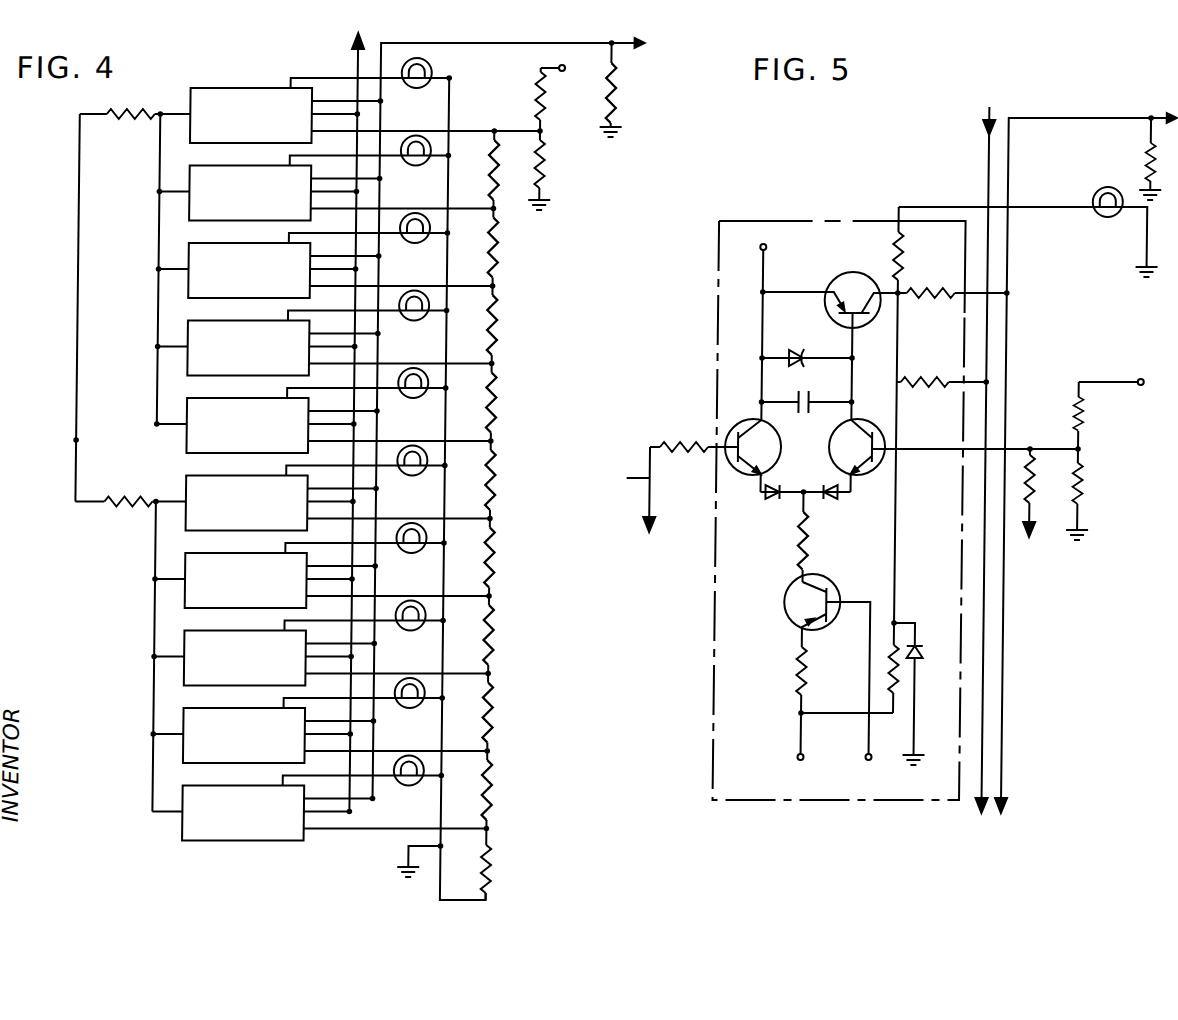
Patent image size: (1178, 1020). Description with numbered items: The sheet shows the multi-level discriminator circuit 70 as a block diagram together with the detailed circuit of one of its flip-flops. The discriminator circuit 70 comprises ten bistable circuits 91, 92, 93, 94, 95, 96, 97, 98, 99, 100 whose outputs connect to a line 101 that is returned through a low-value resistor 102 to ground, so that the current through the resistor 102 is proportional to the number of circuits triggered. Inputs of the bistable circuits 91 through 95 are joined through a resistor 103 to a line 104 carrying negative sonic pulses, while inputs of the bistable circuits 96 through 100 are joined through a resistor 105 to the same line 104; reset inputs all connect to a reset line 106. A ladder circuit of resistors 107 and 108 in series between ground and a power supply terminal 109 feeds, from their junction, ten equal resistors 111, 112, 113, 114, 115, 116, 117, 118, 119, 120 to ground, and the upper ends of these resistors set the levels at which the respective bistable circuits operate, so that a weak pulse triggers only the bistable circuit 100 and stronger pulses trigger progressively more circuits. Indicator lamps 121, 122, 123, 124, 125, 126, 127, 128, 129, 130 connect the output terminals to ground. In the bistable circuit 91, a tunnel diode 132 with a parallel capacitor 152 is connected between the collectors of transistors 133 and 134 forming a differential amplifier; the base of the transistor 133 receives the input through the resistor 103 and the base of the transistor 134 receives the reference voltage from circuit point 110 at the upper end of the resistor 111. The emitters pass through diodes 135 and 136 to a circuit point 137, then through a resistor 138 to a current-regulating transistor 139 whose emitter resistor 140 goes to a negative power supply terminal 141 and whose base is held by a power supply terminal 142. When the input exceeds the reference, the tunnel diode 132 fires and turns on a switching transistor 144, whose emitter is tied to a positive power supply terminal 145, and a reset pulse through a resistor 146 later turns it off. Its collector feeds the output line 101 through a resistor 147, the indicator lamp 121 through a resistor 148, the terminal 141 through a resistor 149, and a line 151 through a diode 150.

In FIG. 4, the discriminator circuit 70 is at (128, 655).
In FIG. 4, the bistable circuit 91 is at (238, 90).
In FIG. 5, the bistable circuit 91 is at (810, 217).
In FIG. 4, the bistable circuit 92 is at (213, 168).
In FIG. 4, the bistable circuit 93 is at (213, 246).
In FIG. 4, the bistable circuit 94 is at (213, 324).
In FIG. 4, the bistable circuit 95 is at (213, 401).
In FIG. 4, the bistable circuit 96 is at (213, 478).
In FIG. 4, the bistable circuit 97 is at (213, 556).
In FIG. 4, the bistable circuit 98 is at (213, 634).
In FIG. 4, the bistable circuit 99 is at (213, 711).
In FIG. 4, the bistable circuit 100 is at (206, 788).
In FIG. 4, the output line 101 is at (515, 47).
In FIG. 5, the output line 101 is at (1010, 160).
In FIG. 4, the resistor 102 is at (623, 85).
In FIG. 5, the resistor 102 is at (1144, 160).
In FIG. 4, the resistor 103 is at (122, 103).
In FIG. 5, the resistor 103 is at (668, 440).
In FIG. 4, the line 104 is at (50, 423).
In FIG. 5, the line 104 is at (626, 489).
In FIG. 4, the resistor 105 is at (120, 495).
In FIG. 4, the reset line 106 is at (352, 60).
In FIG. 5, the reset line 106 is at (984, 150).
In FIG. 4, the resistor 107 is at (545, 167).
In FIG. 5, the resistor 107 is at (1084, 486).
In FIG. 4, the resistor 108 is at (537, 93).
In FIG. 5, the resistor 108 is at (1083, 426).
In FIG. 4, the power supply terminal 109 is at (560, 70).
In FIG. 5, the power supply terminal 109 is at (1138, 379).
In FIG. 5, the circuit point 110 is at (1078, 449).
In FIG. 4, the resistor 111 is at (488, 177).
In FIG. 5, the resistor 111 is at (1037, 472).
In FIG. 4, the resistor 112 is at (497, 250).
In FIG. 4, the resistor 113 is at (497, 325).
In FIG. 4, the resistor 114 is at (497, 395).
In FIG. 4, the resistor 115 is at (497, 475).
In FIG. 4, the resistor 116 is at (497, 551).
In FIG. 4, the resistor 117 is at (497, 630).
In FIG. 4, the resistor 118 is at (497, 705).
In FIG. 4, the resistor 119 is at (497, 788).
In FIG. 4, the resistor 120 is at (497, 860).
In FIG. 4, the indicator lamp 121 is at (411, 88).
In FIG. 5, the indicator lamp 121 is at (1101, 218).
In FIG. 4, the indicator lamp 122 is at (411, 166).
In FIG. 4, the indicator lamp 123 is at (411, 243).
In FIG. 4, the indicator lamp 124 is at (411, 320).
In FIG. 4, the indicator lamp 125 is at (411, 398).
In FIG. 4, the indicator lamp 126 is at (411, 476).
In FIG. 4, the indicator lamp 127 is at (411, 553).
In FIG. 4, the indicator lamp 128 is at (411, 630).
In FIG. 4, the indicator lamp 129 is at (411, 708).
In FIG. 4, the indicator lamp 130 is at (411, 786).
In FIG. 5, the tunnel diode 132 is at (791, 349).
In FIG. 5, the transistor 133 is at (747, 430).
In FIG. 5, the transistor 134 is at (853, 428).
In FIG. 5, the diode 135 is at (778, 498).
In FIG. 5, the diode 136 is at (826, 498).
In FIG. 5, the circuit point 137 is at (803, 488).
In FIG. 5, the resistor 138 is at (800, 543).
In FIG. 5, the transistor 139 is at (797, 590).
In FIG. 5, the resistor 140 is at (800, 663).
In FIG. 5, the power supply terminal 141 is at (802, 760).
In FIG. 5, the power supply terminal 142 is at (870, 760).
In FIG. 5, the switching transistor 144 is at (838, 287).
In FIG. 5, the power supply terminal 145 is at (764, 248).
In FIG. 5, the resistor 146 is at (912, 381).
In FIG. 5, the resistor 147 is at (935, 300).
In FIG. 5, the resistor 148 is at (901, 243).
In FIG. 5, the resistor 149 is at (901, 677).
In FIG. 5, the diode 150 is at (922, 645).
In FIG. 5, the line 151 is at (915, 734).
In FIG. 5, the capacitor 152 is at (813, 400).